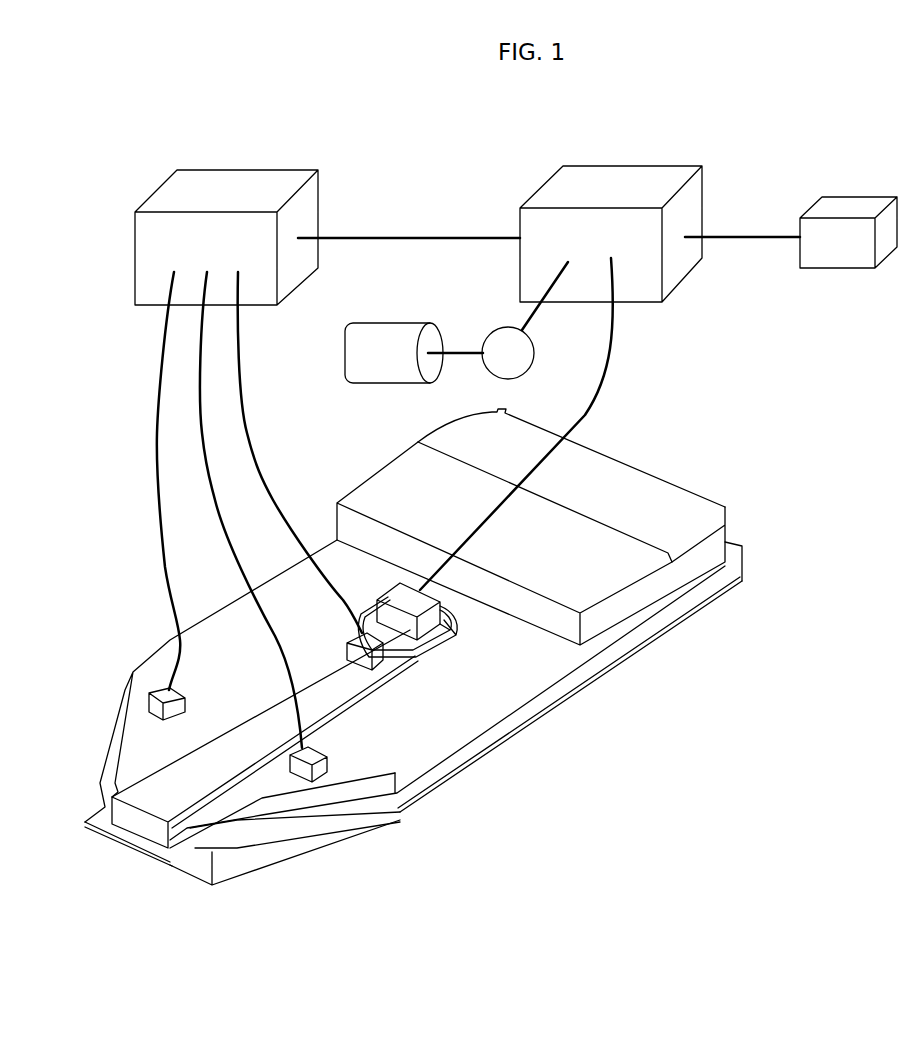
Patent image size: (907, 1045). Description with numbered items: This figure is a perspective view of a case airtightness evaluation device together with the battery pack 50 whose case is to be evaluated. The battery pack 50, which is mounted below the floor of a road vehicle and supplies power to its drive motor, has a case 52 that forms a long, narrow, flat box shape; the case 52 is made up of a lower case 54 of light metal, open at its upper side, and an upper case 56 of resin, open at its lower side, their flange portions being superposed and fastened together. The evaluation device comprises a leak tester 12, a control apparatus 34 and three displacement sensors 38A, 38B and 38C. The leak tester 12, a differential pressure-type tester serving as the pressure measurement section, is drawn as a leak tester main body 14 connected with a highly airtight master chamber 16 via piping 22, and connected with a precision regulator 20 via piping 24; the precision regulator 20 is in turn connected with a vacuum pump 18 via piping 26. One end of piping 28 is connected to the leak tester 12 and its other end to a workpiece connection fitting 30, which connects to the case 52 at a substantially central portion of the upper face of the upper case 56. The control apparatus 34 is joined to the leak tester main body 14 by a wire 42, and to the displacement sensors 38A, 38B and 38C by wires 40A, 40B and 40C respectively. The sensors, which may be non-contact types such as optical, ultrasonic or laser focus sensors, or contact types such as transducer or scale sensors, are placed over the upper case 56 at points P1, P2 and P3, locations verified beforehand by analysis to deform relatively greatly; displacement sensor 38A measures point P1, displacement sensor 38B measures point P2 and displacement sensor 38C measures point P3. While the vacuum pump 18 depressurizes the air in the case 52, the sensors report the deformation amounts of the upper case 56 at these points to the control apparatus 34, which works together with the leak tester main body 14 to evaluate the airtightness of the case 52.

The leak tester 12 is at (734, 330).
The leak tester main body 14 is at (632, 178).
The master chamber 16 is at (864, 205).
The vacuum pump 18 is at (394, 322).
The precision regulator 20 is at (536, 344).
The piping 22 is at (757, 233).
The piping 24 is at (548, 280).
The piping 26 is at (458, 348).
The piping 28 is at (603, 388).
The workpiece connection fitting 30 is at (408, 585).
The control apparatus 34 is at (230, 175).
The displacement sensor 38A is at (148, 698).
The displacement sensor 38B is at (318, 773).
The displacement sensor 38C is at (380, 655).
The wire 40A is at (165, 555).
The wire 40B is at (223, 540).
The wire 40C is at (322, 567).
The wire 42 is at (414, 235).
The battery pack 50 is at (413, 679).
The case 52 is at (458, 784).
The lower case 54 is at (225, 868).
The upper case 56 is at (263, 818).
The point P1 is at (160, 720).
The point P2 is at (297, 781).
The point P3 is at (355, 668).